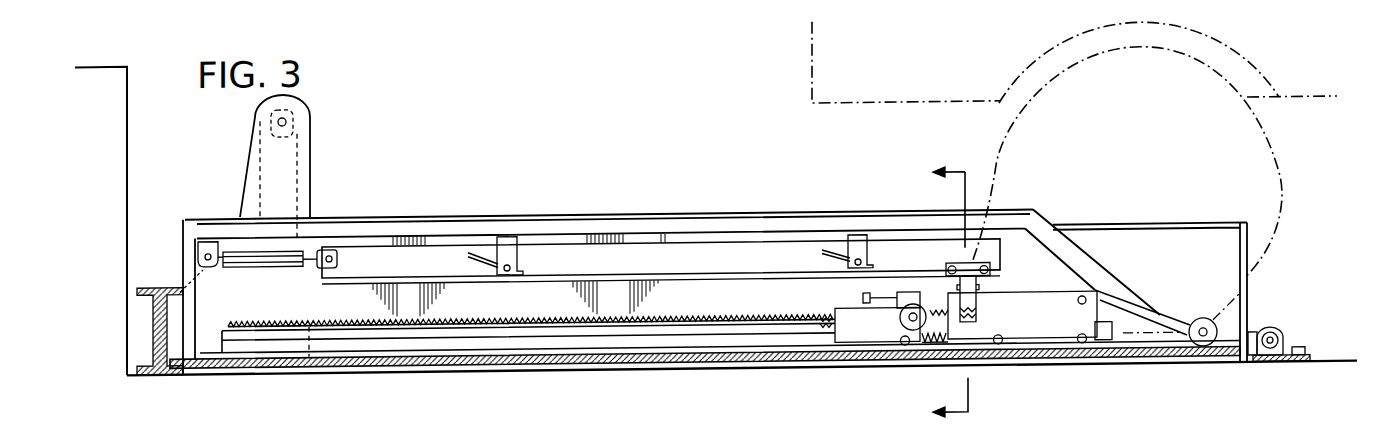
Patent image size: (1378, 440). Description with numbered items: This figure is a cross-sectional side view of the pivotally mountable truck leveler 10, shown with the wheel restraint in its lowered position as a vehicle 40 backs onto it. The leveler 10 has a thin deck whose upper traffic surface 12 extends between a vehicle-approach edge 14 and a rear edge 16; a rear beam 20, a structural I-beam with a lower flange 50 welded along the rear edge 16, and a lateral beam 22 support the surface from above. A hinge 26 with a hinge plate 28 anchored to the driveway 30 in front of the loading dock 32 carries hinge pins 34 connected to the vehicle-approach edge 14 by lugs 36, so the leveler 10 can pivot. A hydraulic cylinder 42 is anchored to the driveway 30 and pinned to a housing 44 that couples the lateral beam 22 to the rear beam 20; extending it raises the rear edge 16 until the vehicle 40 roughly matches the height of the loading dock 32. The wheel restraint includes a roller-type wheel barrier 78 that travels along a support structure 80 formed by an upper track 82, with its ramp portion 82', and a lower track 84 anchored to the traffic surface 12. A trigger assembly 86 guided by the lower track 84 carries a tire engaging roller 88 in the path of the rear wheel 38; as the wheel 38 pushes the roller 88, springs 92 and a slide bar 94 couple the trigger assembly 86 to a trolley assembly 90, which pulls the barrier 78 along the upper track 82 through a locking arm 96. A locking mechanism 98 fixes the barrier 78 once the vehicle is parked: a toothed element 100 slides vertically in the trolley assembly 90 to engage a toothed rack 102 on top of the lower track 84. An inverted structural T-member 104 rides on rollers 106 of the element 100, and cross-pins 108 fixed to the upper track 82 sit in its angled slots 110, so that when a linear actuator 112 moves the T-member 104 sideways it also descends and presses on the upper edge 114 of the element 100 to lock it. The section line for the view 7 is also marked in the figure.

The leveler 10 is at (445, 191).
The upper traffic surface 12 is at (205, 333).
The vehicle-approach edge 14 is at (1237, 356).
The rear edge 16 is at (177, 354).
The rear beam 20 is at (147, 280).
The lateral beam 22 is at (1145, 228).
The hinge 26 is at (1289, 308).
The hinge plate 28 is at (1307, 358).
The driveway 30 is at (1318, 368).
The loading dock 32 is at (128, 152).
The hinge pins 34 is at (1273, 340).
The lugs 36 is at (1252, 338).
The rear wheel 38 is at (994, 166).
The vehicle 40 is at (855, 108).
The hydraulic cylinder 42 is at (258, 183).
The housing 44 is at (252, 118).
The lower flange 50 is at (173, 365).
The wheel barrier 78 is at (1200, 380).
The support structure 80 is at (1287, 249).
The upper track 82 is at (910, 233).
The ramp portion 82' is at (1092, 249).
The lower track 84 is at (765, 352).
The trigger assembly 86 is at (883, 368).
The tire engaging roller 88 is at (898, 321).
The trolley assembly 90 is at (1062, 330).
The spring 92 is at (930, 352).
The slide bar 94 is at (878, 288).
The locking arm 96 is at (1170, 325).
The locking mechanism 98 is at (984, 315).
The toothed element 100 is at (972, 266).
The toothed rack 102 is at (752, 318).
The inverted structural T-member 104 is at (617, 270).
The rollers 106 is at (948, 269).
The cross-pins 108 is at (505, 238).
The angled slots 110 is at (478, 256).
The linear actuator 112 is at (242, 265).
The upper edge 114 is at (980, 287).
The section line 7- 7 is at (940, 293).